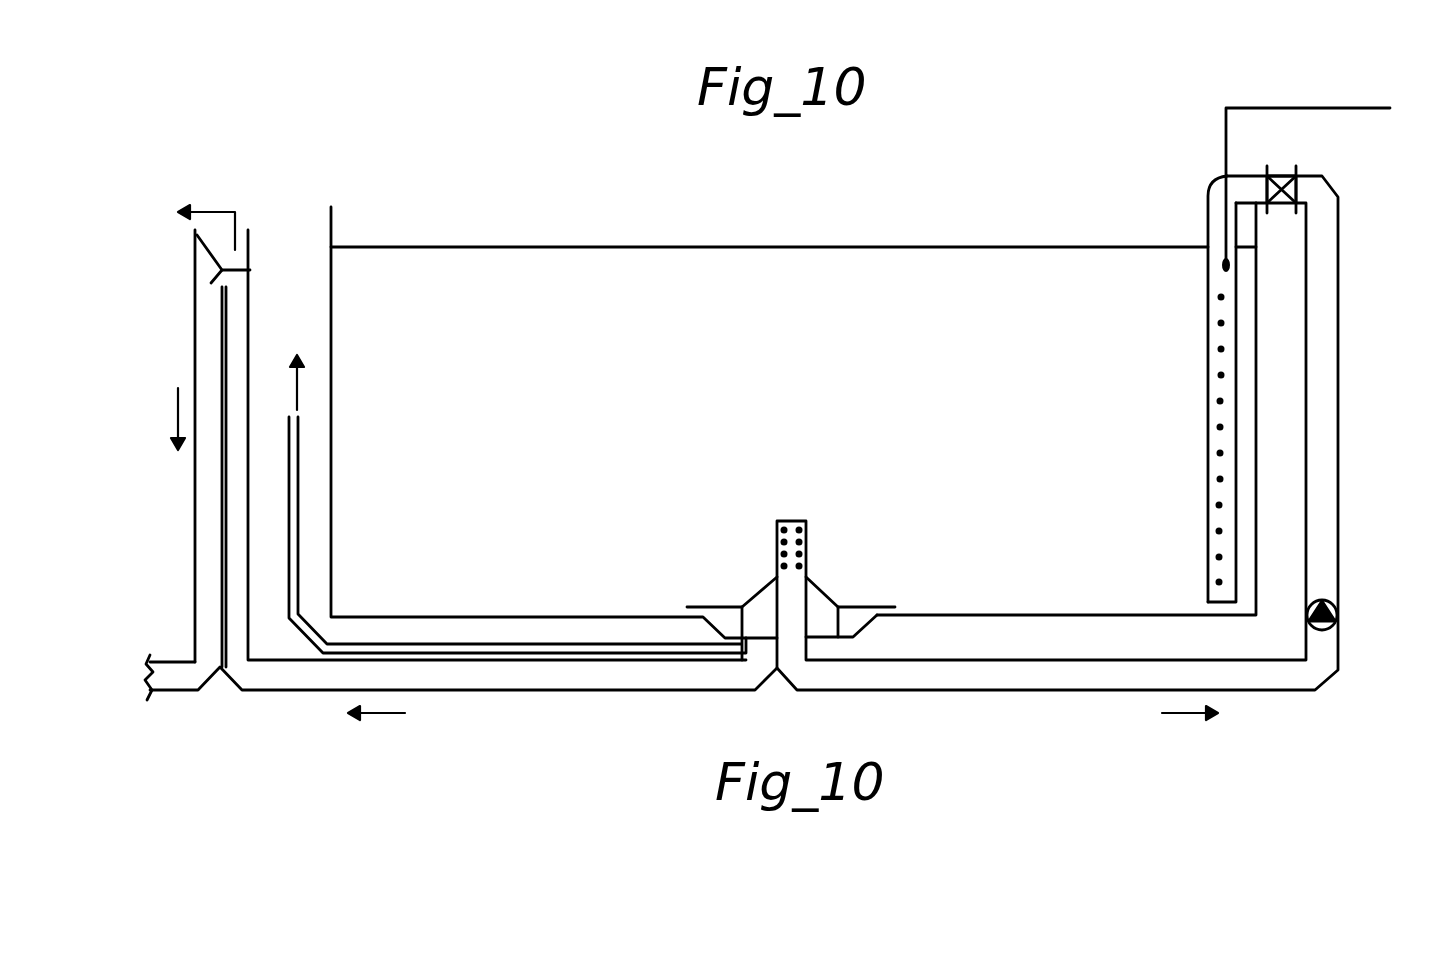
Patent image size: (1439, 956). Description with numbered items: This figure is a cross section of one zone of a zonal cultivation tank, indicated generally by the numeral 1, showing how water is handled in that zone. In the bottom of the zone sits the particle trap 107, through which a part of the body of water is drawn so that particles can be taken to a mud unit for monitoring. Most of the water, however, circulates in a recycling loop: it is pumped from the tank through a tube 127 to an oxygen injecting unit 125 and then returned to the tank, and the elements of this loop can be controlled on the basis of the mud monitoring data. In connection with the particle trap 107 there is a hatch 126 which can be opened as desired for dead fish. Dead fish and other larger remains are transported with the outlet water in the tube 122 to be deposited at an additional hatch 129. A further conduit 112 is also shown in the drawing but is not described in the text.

The aquarium filtration system 1 is at (406, 176).
The particle trap 107 is at (887, 640).
The return conduit 112 is at (557, 660).
The tube 122 is at (195, 580).
The oxygen injecting unit 125 is at (1210, 203).
The hatch 126 is at (756, 612).
The tube 127 is at (1103, 667).
The additional hatch 129 is at (195, 267).